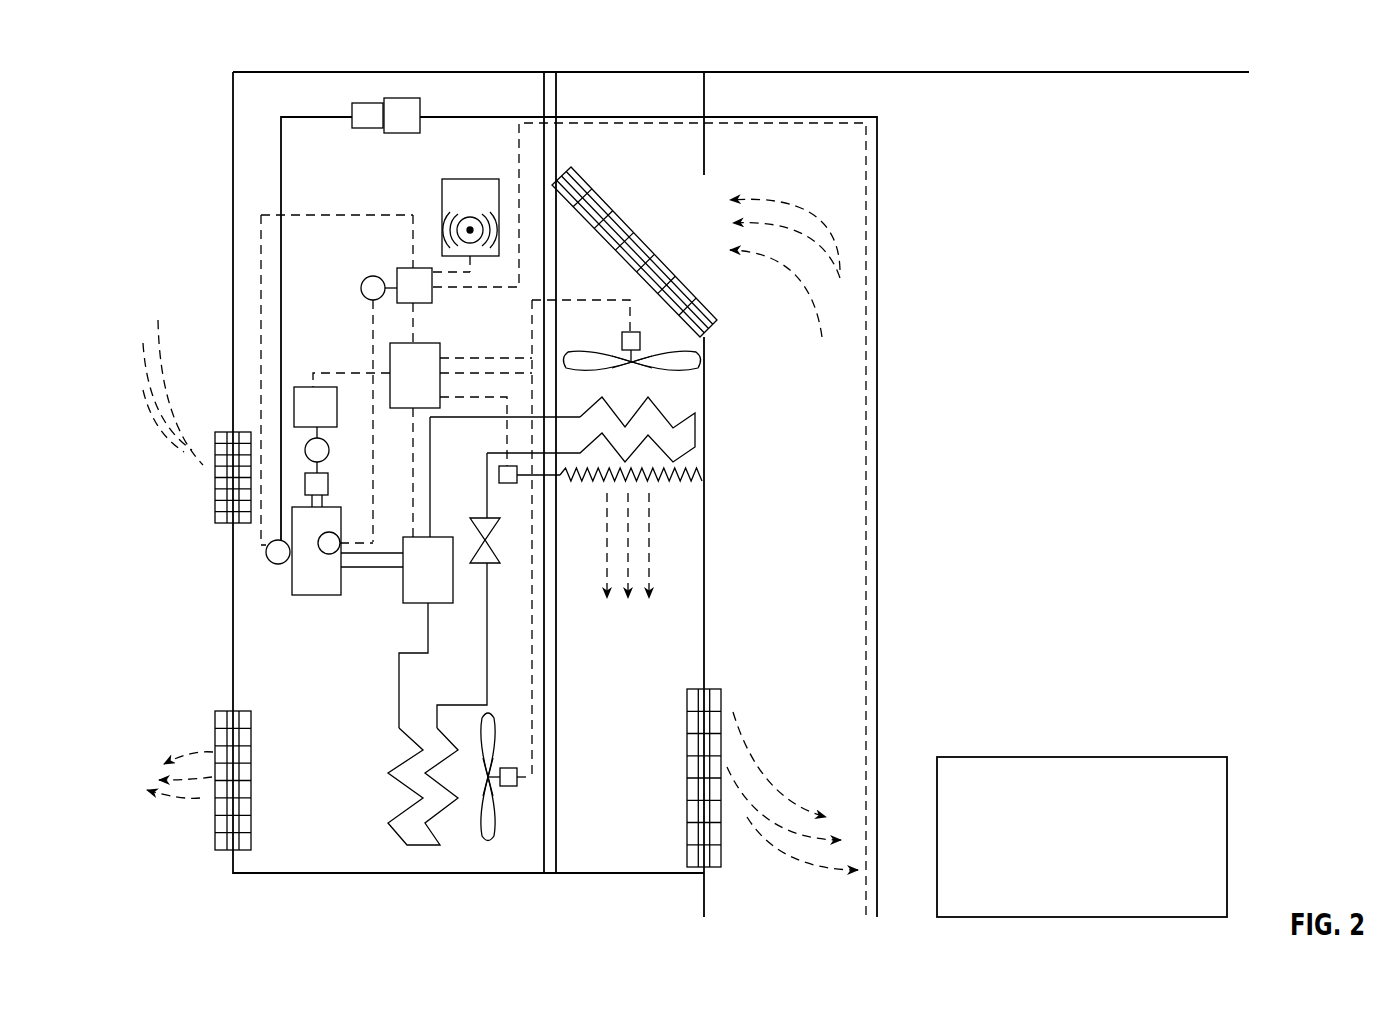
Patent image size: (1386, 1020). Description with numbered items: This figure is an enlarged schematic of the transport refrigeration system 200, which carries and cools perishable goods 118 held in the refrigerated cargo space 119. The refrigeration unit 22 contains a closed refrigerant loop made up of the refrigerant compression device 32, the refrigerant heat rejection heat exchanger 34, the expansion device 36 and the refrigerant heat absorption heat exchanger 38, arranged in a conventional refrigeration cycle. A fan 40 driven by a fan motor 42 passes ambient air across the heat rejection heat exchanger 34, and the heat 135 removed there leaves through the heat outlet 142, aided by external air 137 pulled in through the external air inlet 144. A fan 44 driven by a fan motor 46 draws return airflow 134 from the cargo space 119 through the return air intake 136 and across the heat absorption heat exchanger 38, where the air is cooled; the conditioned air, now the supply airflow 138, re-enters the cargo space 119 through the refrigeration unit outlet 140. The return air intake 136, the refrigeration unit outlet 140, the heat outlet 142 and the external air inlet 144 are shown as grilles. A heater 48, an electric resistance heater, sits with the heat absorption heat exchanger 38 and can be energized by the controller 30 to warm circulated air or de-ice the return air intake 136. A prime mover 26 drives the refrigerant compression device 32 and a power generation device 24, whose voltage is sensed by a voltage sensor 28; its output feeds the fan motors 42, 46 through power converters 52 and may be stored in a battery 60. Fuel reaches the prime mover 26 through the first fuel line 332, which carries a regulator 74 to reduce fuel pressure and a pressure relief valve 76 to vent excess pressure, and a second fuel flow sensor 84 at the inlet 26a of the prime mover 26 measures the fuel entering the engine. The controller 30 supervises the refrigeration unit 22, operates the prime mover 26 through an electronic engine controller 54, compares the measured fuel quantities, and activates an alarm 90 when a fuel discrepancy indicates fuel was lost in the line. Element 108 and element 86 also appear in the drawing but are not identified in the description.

The transport refrigeration system 200 is at (184, 123).
The building wall 108 is at (997, 72).
The refrigeration unit 22 is at (345, 72).
The first fuel line 332 is at (879, 512).
The refrigerated cargo space 119 is at (944, 349).
The perishable goods 118 is at (980, 755).
The pressure relief valve 76 is at (365, 128).
The regulator 74 is at (400, 133).
The alarm 90 is at (472, 167).
The electronic engine controller 54 is at (361, 285).
The controller 30 is at (433, 300).
The power converters 52 is at (393, 408).
The battery 60 is at (307, 395).
The voltage sensor 28 is at (329, 452).
The power generation device 24 is at (328, 483).
The prime mover 26 is at (295, 595).
The inlet of the prime mover 26a is at (290, 555).
The second fuel flow sensor 84 is at (273, 562).
The sensor 86 is at (327, 553).
The refrigerant compression device 32 is at (403, 588).
The expansion device 36 is at (517, 553).
The refrigerant heat rejection heat exchanger 34 is at (417, 847).
The fan 40 is at (487, 837).
The fan motor 42 is at (508, 787).
The refrigerant heat absorption heat exchanger 38 is at (697, 415).
The heater 48 is at (702, 470).
The fan motor 46 is at (622, 340).
The fan 44 is at (690, 362).
The return air intake 136 is at (628, 227).
The return airflow 134 is at (820, 300).
The external air inlet 144 is at (215, 517).
The external air 137 is at (152, 380).
The heat outlet 142 is at (215, 723).
The heat 135 is at (160, 802).
The refrigeration unit outlet 140 is at (687, 698).
The supply airflow 138 is at (775, 757).